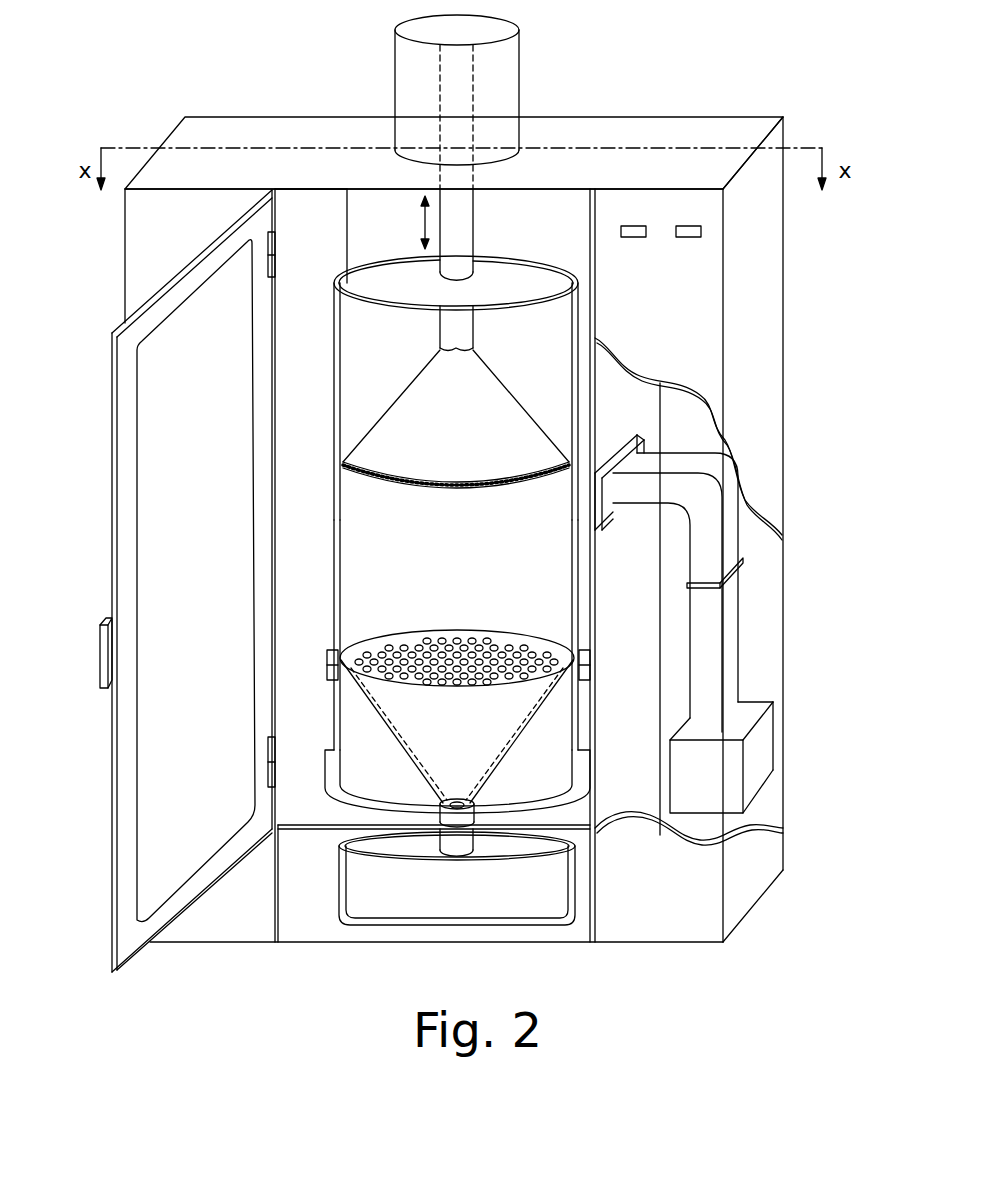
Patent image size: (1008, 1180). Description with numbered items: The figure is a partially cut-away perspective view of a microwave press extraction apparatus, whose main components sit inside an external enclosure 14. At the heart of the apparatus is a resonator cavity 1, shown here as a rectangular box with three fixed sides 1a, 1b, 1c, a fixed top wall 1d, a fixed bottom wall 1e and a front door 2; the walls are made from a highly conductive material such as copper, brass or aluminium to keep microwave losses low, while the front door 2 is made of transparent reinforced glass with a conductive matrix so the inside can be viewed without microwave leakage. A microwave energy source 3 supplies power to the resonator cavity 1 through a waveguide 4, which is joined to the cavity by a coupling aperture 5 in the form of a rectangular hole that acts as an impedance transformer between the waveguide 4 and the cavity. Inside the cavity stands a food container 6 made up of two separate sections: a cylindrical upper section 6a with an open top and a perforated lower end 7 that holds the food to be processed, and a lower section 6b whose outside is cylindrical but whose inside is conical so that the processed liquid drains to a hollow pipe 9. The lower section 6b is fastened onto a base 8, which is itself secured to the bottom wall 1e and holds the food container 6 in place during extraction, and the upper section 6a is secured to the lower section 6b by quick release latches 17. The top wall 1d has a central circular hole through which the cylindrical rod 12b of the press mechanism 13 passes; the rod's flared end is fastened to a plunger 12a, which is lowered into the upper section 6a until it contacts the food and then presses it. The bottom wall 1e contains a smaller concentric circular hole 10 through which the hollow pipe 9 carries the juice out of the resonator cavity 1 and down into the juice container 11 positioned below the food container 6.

The resonator cavity 1 is at (567, 200).
The fixed side wall 1a is at (525, 232).
The fixed side wall 1b is at (320, 228).
The fixed side wall 1c is at (597, 635).
The top wall 1d is at (388, 191).
The bottom wall 1e is at (315, 812).
The front door 2 is at (158, 795).
The microwave energy source 3 is at (757, 710).
The waveguide 4 is at (710, 541).
The coupling aperture 5 is at (633, 445).
The food container 6 is at (433, 534).
The upper section 6a is at (557, 337).
The lower section 6b is at (375, 745).
The perforated lower end 7 is at (453, 640).
The base 8 is at (370, 808).
The hollow pipe 9 is at (457, 800).
The concentric circular hole 10 is at (472, 815).
The juice container 11 is at (555, 895).
The plunger 12a is at (465, 485).
The cylindrical rod 12b is at (455, 325).
The press mechanism 13 is at (508, 80).
The external enclosure 14 is at (265, 127).
The quick release latches 17 is at (330, 663).